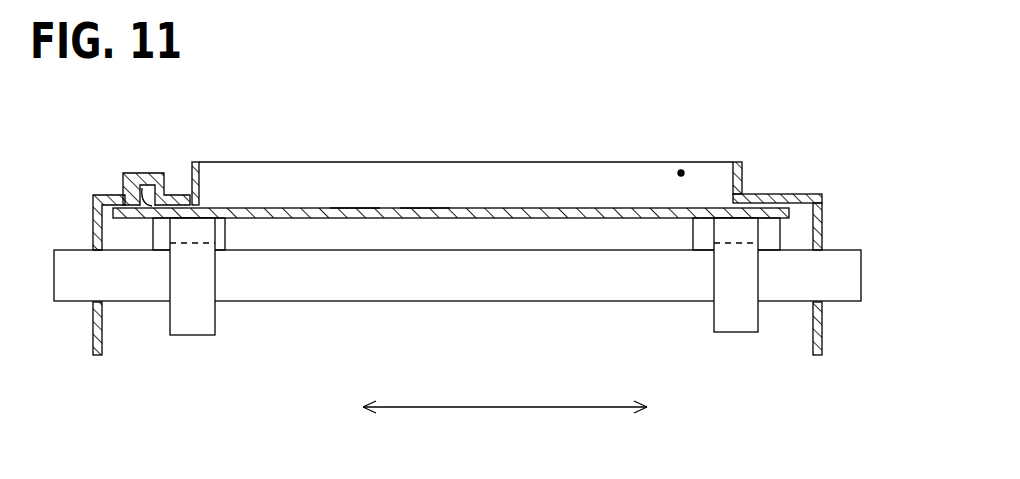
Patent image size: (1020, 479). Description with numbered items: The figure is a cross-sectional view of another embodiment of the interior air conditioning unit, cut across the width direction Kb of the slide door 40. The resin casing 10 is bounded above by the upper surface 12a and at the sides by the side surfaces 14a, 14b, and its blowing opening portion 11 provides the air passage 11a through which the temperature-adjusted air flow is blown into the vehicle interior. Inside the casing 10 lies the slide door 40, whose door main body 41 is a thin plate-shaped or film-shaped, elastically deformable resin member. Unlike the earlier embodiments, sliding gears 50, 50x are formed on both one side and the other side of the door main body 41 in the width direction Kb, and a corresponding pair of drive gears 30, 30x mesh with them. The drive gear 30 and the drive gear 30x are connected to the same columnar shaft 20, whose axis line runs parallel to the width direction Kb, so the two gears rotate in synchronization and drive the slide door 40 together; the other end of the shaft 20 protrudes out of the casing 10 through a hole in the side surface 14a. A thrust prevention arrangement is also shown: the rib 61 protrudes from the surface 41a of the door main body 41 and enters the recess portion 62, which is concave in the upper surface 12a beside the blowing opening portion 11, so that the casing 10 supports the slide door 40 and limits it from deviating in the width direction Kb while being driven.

The casing 10 is at (823, 223).
The blowing opening portion 11 is at (742, 180).
The air passage 11a is at (682, 170).
The upper surface 12a is at (805, 195).
The side surface 14a is at (98, 332).
The side surface 14b is at (822, 322).
The shaft 20 is at (63, 301).
The drive gear 30 is at (188, 337).
The drive gear 30x is at (735, 334).
The slide door 40 is at (571, 219).
The door main body 41 is at (420, 207).
The surface 41a is at (352, 207).
The sliding gear 50 is at (225, 236).
The sliding gear 50x is at (693, 233).
The rib 61 is at (181, 206).
The recess portion 62 is at (137, 173).
The width direction Kb is at (505, 423).